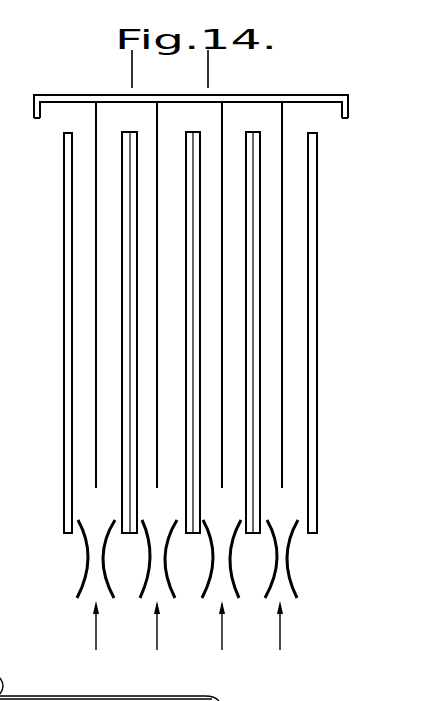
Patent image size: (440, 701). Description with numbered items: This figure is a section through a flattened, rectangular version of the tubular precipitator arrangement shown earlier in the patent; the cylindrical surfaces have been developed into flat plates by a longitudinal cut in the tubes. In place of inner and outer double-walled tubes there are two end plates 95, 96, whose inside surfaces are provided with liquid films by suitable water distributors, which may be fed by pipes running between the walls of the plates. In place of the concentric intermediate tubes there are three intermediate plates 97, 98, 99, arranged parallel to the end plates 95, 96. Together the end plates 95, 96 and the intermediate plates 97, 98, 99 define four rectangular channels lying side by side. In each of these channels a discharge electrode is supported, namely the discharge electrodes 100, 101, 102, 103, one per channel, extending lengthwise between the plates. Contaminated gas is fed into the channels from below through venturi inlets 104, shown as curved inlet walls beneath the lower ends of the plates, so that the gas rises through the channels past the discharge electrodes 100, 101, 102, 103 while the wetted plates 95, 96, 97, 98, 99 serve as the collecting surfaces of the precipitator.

The end plate 95 is at (317, 414).
The end plate 96 is at (64, 412).
The intermediate plate 97 is at (260, 440).
The intermediate plate 98 is at (186, 450).
The intermediate plate 99 is at (122, 430).
The discharge electrode 100 is at (282, 341).
The discharge electrode 101 is at (223, 369).
The discharge electrode 102 is at (157, 318).
The discharge electrode 103 is at (96, 348).
The venturi inlet 104 is at (85, 568).